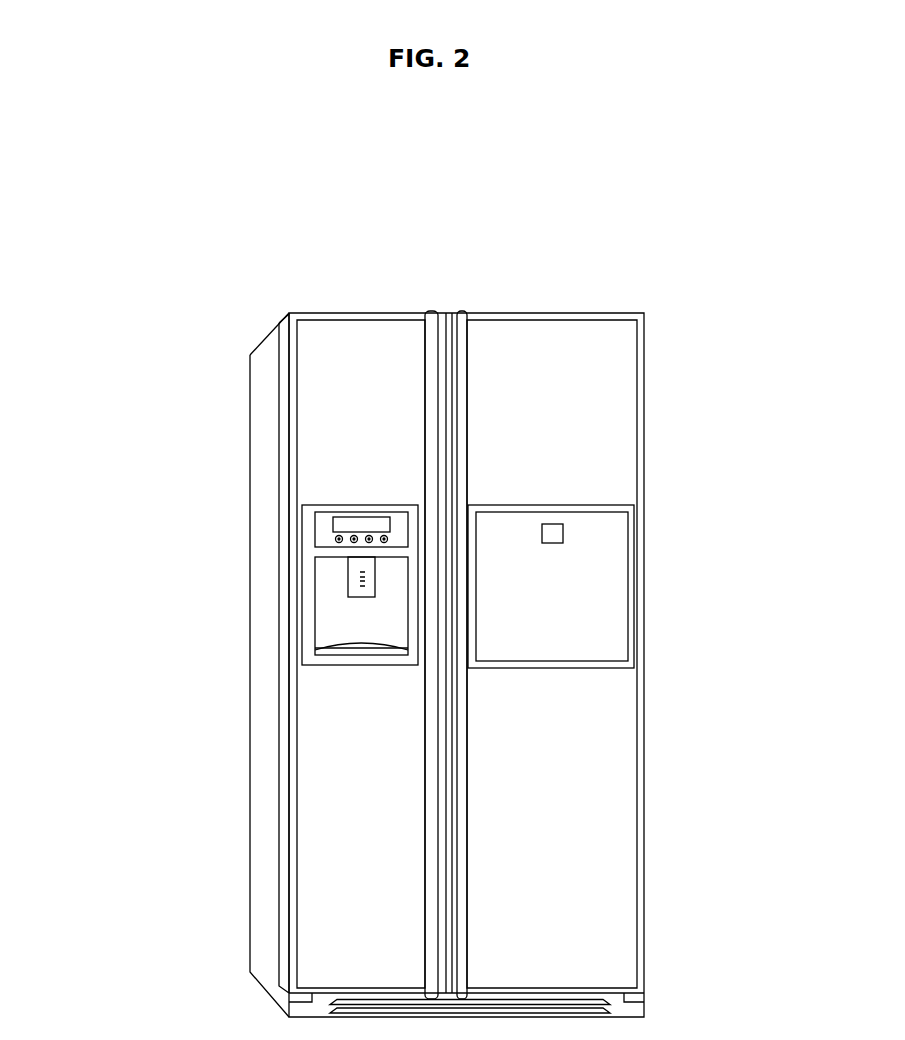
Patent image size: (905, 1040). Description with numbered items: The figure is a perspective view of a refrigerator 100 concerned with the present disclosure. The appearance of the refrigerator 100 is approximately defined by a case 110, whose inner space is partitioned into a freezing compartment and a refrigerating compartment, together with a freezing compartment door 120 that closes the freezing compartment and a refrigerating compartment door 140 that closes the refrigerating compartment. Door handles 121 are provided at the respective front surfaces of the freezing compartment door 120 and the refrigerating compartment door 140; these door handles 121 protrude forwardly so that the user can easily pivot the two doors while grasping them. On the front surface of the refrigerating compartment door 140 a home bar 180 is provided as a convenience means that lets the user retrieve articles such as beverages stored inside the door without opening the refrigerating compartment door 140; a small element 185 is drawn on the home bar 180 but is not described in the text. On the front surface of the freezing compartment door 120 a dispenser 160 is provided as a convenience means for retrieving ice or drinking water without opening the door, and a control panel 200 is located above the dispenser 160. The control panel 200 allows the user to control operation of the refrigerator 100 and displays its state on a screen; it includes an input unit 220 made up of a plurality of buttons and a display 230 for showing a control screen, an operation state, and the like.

The refrigerator 100 is at (153, 202).
The case 110 is at (265, 386).
The freezing compartment door 120 is at (320, 350).
The door handles 121 is at (460, 311).
The refrigerating compartment door 140 is at (603, 402).
The dispenser 160 is at (337, 615).
The home bar 180 is at (603, 600).
The home bar latch 185 is at (550, 537).
The control panel 200 is at (127, 510).
The input unit 220 is at (335, 542).
The display 230 is at (340, 521).